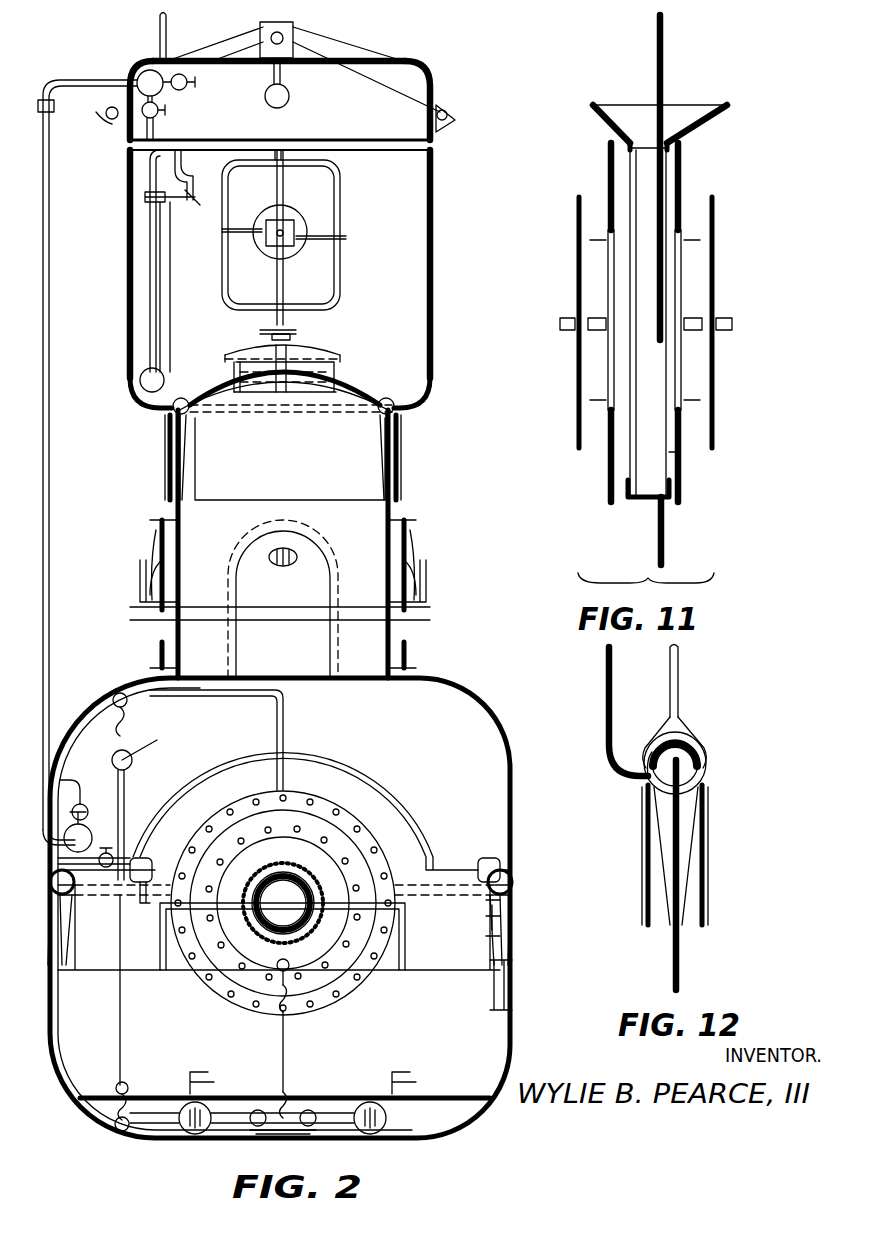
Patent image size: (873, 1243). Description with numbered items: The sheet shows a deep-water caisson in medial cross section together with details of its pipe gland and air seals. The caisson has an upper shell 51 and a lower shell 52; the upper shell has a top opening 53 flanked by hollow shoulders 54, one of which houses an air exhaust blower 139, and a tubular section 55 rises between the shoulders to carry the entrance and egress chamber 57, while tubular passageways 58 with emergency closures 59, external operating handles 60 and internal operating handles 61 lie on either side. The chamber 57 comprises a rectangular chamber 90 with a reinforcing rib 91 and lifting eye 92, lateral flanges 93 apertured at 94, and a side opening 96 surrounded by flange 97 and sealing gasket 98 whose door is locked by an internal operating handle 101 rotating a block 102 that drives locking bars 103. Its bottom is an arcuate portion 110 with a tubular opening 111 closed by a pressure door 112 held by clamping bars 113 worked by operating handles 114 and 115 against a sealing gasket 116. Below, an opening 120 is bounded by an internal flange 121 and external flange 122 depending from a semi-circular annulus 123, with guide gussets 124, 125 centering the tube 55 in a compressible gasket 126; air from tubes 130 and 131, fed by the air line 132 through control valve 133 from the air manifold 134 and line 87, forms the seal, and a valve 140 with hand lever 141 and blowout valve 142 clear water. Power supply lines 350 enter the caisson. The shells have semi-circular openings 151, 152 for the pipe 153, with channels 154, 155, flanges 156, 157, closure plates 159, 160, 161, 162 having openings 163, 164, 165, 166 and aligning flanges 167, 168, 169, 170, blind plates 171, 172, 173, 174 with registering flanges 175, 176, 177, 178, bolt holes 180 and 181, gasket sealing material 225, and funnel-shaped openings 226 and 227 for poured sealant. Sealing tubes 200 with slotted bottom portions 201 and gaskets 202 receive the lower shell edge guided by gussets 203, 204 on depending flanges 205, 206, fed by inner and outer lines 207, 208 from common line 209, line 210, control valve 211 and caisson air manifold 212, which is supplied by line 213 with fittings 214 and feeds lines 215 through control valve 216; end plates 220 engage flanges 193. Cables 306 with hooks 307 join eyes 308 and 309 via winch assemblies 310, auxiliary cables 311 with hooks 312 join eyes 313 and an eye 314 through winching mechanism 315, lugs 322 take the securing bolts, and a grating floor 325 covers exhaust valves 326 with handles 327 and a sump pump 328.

In FIG. 2, the upper shell 51 is at (482, 690).
In FIG. 11, the upper shell 51 is at (668, 50).
In FIG. 2, the lower shell 52 is at (520, 990).
In FIG. 11, the lower shell 52 is at (668, 530).
In FIG. 2, the top opening 53 is at (335, 680).
In FIG. 2, the shoulders 54 is at (252, 548).
In FIG. 2, the tubular section 55 is at (392, 502).
In FIG. 12, the tubular section 55 is at (684, 952).
In FIG. 2, the entrance and egress chamber 57 is at (440, 150).
In FIG. 12, the entrance and egress chamber 57 is at (596, 692).
In FIG. 2, the tubular passageways 58 is at (160, 522).
In FIG. 2, the emergency closures 59 is at (154, 540).
In FIG. 2, the external operating handles 60 is at (140, 572).
In FIG. 2, the internal operating handles 61 is at (160, 564).
In FIG. 2, the air line 87 is at (158, 42).
In FIG. 2, the rectangular chamber 90 is at (436, 170).
In FIG. 12, the rectangular chamber 90 is at (612, 700).
In FIG. 2, the reinforcing rib 91 is at (258, 40).
In FIG. 2, the lifting eye 92 is at (284, 38).
In FIG. 2, the flanges 93 is at (444, 100).
In FIG. 2, the apertures 94 is at (448, 112).
In FIG. 2, the side opening 96 is at (334, 208).
In FIG. 2, the flange 97 is at (334, 216).
In FIG. 2, the sealing gasket 98 is at (338, 248).
In FIG. 2, the internal operating handle 101 is at (256, 248).
In FIG. 2, the block 102 is at (324, 180).
In FIG. 2, the locking bars 103 is at (272, 200).
In FIG. 2, the arcuate portion 110 is at (360, 384).
In FIG. 2, the tubular opening 111 is at (326, 358).
In FIG. 2, the pressure door 112 is at (292, 348).
In FIG. 2, the clamping bars 113 is at (262, 334).
In FIG. 2, the operating handle 114 is at (290, 330).
In FIG. 2, the operating handle 115 is at (283, 392).
In FIG. 2, the sealing gasket 116 is at (230, 366).
In FIG. 2, the opening 120 is at (346, 465).
In FIG. 2, the internal flange 121 is at (192, 462).
In FIG. 12, the internal flange 121 is at (706, 846).
In FIG. 2, the external flange 122 is at (164, 458).
In FIG. 12, the external flange 122 is at (644, 820).
In FIG. 2, the semi-circular annulus 123 is at (362, 412).
In FIG. 12, the semi-circular annulus 123 is at (700, 752).
In FIG. 2, the guide gusset 124 is at (166, 432).
In FIG. 12, the guide gusset 124 is at (644, 800).
In FIG. 2, the guide gusset 125 is at (192, 438).
In FIG. 12, the guide gusset 125 is at (700, 824).
In FIG. 2, the compressible gasket 126 is at (392, 400).
In FIG. 12, the compressible gasket 126 is at (694, 744).
In FIG. 2, the tube 130 is at (194, 410).
In FIG. 12, the tube 130 is at (684, 726).
In FIG. 2, the tube 131 is at (158, 408).
In FIG. 12, the tube 131 is at (648, 755).
In FIG. 2, the air line 132 is at (160, 258).
In FIG. 12, the air line 132 is at (680, 680).
In FIG. 2, the control valve 133 is at (157, 112).
In FIG. 2, the air manifold 134 is at (138, 78).
In FIG. 2, the air exhaust blower 139 is at (297, 562).
In FIG. 2, the valve 140 is at (140, 378).
In FIG. 2, the hand lever 141 is at (190, 196).
In FIG. 2, the blowout valve 142 is at (190, 85).
In FIG. 11, the semi-circular opening 151 is at (682, 180).
In FIG. 11, the semi-circular opening 152 is at (684, 474).
In FIG. 2, the pipe 153 is at (282, 856).
In FIG. 2, the semi-circular channel 154 is at (252, 800).
In FIG. 11, the semi-circular channel 154 is at (624, 140).
In FIG. 2, the semi-circular channel 155 is at (244, 1020).
In FIG. 11, the semi-circular channel 155 is at (626, 500).
In FIG. 11, the flange 156 is at (640, 312).
In FIG. 11, the flange 157 is at (638, 332).
In FIG. 2, the inner closure plate 159 is at (240, 826).
In FIG. 11, the inner closure plate 159 is at (606, 170).
In FIG. 11, the outer closure plate 160 is at (684, 170).
In FIG. 2, the inside closure plate 161 is at (236, 1000).
In FIG. 11, the inside closure plate 161 is at (606, 446).
In FIG. 11, the outside closure plate 162 is at (684, 452).
In FIG. 11, the semi-circular opening 163 is at (606, 232).
In FIG. 11, the semi-circular opening 164 is at (684, 234).
In FIG. 11, the semi-circular opening 165 is at (606, 400).
In FIG. 11, the semi-circular opening 166 is at (684, 402).
In FIG. 11, the aligning flange 167 is at (580, 308).
In FIG. 11, the aligning flange 168 is at (594, 332).
In FIG. 11, the aligning flange 169 is at (700, 310).
In FIG. 11, the aligning flange 170 is at (694, 334).
In FIG. 11, the outside upper blind plate 171 is at (710, 218).
In FIG. 11, the outside lower blind plate 172 is at (714, 414).
In FIG. 2, the inside upper blind plate 173 is at (214, 850).
In FIG. 11, the inside upper blind plate 173 is at (574, 216).
In FIG. 2, the inside lower blind plate 174 is at (218, 990).
In FIG. 11, the inside lower blind plate 174 is at (574, 378).
In FIG. 11, the registering flange 175 is at (726, 318).
In FIG. 11, the registering flange 176 is at (718, 330).
In FIG. 11, the registering flange 177 is at (562, 318).
In FIG. 11, the registering flange 178 is at (566, 330).
In FIG. 2, the bolt holes 180 is at (286, 796).
In FIG. 11, the bolt holes 180 is at (684, 156).
In FIG. 2, the bolt holes 181 is at (326, 830).
In FIG. 11, the bolt holes 181 is at (576, 204).
In FIG. 2, the flanges 193 is at (162, 975).
In FIG. 2, the cylindrical tubes 200 is at (392, 870).
In FIG. 2, the slotted bottom portions 201 is at (486, 902).
In FIG. 2, the sealing gaskets 202 is at (510, 876).
In FIG. 2, the guide gusset 203 is at (488, 920).
In FIG. 2, the guide gusset 204 is at (510, 904).
In FIG. 2, the internal depending flange 205 is at (92, 968).
In FIG. 2, the external depending flange 206 is at (66, 922).
In FIG. 2, the inner lines 207 is at (154, 866).
In FIG. 2, the outer lines 208 is at (510, 888).
In FIG. 2, the common line 209 is at (242, 760).
In FIG. 2, the line 210 is at (116, 850).
In FIG. 2, the control valve 211 is at (108, 868).
In FIG. 2, the caisson air manifold 212 is at (106, 832).
In FIG. 2, the line 213 is at (50, 700).
In FIG. 2, the fittings 214 is at (56, 108).
In FIG. 2, the lines 215 is at (284, 716).
In FIG. 2, the control valve 216 is at (86, 806).
In FIG. 2, the end plates 220 is at (168, 968).
In FIG. 2, the gasket sealing material 225 is at (312, 870).
In FIG. 11, the funnel-shaped opening 226 is at (630, 108).
In FIG. 11, the funnel-shaped opening 227 is at (686, 108).
In FIG. 2, the cables 306 is at (120, 1020).
In FIG. 2, the hooks 307 is at (130, 1084).
In FIG. 2, the eyes 308 is at (120, 693).
In FIG. 2, the eyes 309 is at (126, 710).
In FIG. 2, the winch assemblies 310 is at (126, 750).
In FIG. 2, the auxiliary cables 311 is at (282, 1048).
In FIG. 2, the hooks 312 is at (290, 968).
In FIG. 2, the eyes 313 is at (256, 1134).
In FIG. 2, the eye 314 is at (278, 962).
In FIG. 2, the winching mechanism 315 is at (280, 1000).
In FIG. 2, the lugs 322 is at (496, 972).
In FIG. 2, the grating floor 325 is at (324, 1092).
In FIG. 2, the exhaust valves 326 is at (200, 1134).
In FIG. 2, the handles 327 is at (188, 1086).
In FIG. 2, the sump pump 328 is at (306, 1110).
In FIG. 2, the electric power supply lines 350 is at (268, 98).